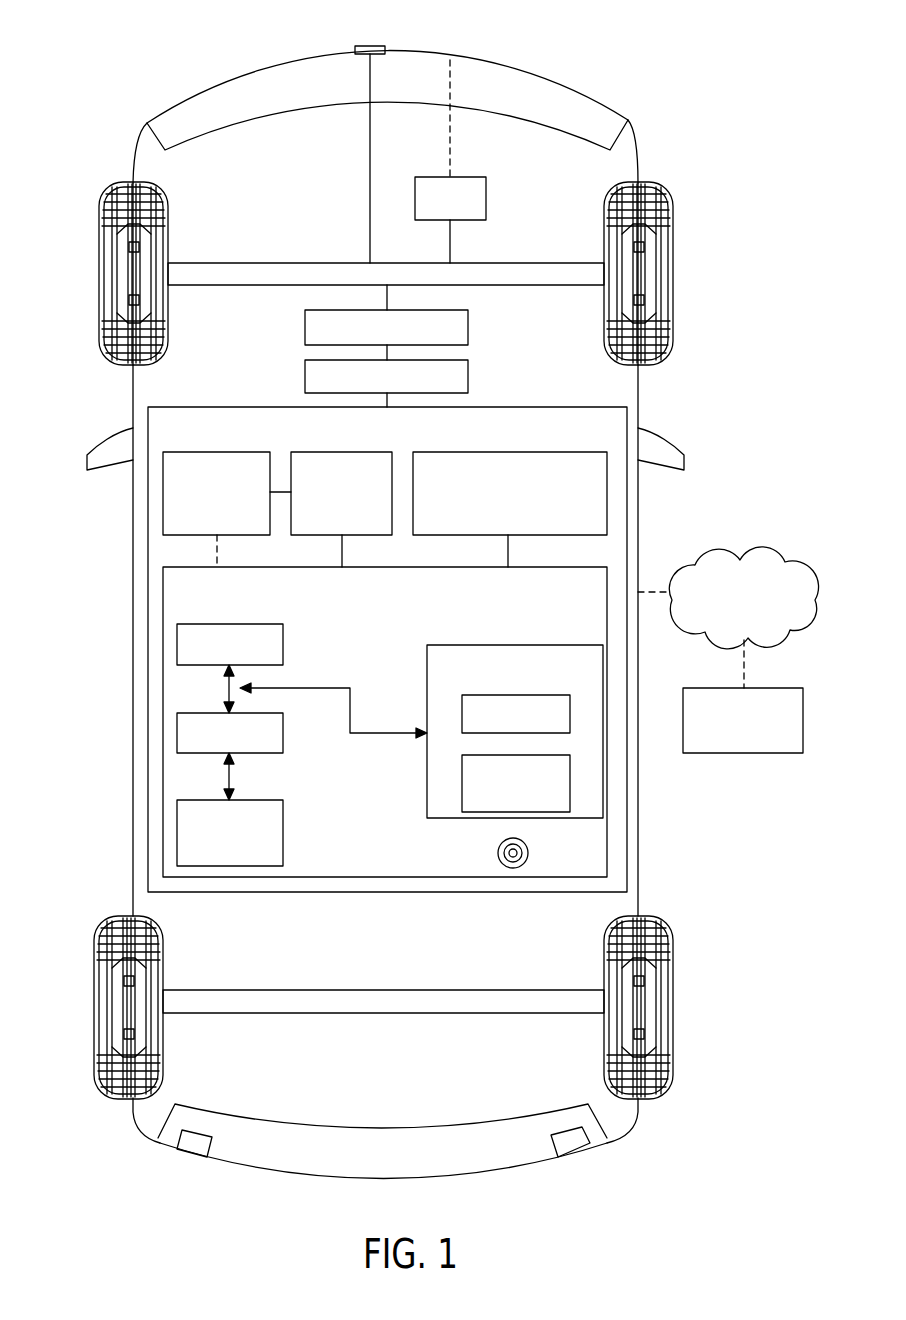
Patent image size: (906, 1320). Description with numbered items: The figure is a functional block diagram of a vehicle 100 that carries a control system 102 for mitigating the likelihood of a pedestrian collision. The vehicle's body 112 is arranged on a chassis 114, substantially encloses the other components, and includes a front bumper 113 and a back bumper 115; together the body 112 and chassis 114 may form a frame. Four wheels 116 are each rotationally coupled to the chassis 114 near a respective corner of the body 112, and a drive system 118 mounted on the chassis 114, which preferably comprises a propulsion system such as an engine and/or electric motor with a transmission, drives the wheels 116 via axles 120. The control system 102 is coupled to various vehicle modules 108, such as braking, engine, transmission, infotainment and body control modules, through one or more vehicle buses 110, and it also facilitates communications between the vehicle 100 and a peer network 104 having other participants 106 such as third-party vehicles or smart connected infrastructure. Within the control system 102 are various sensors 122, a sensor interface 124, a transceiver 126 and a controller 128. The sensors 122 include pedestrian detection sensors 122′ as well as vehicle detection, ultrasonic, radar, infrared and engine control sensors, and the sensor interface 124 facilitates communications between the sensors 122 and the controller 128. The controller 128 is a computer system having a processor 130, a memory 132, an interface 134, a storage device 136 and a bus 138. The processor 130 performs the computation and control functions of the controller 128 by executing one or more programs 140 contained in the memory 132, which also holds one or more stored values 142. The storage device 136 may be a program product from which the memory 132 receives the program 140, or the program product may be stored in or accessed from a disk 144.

The vehicle 100 is at (630, 75).
The control system 102 is at (213, 405).
The peer network 104 is at (745, 548).
The participants 106 is at (752, 755).
The vehicle modules 108 is at (470, 328).
The vehicle buses 110 is at (470, 378).
The body 112 is at (132, 388).
The front bumper 113 is at (240, 70).
The chassis 114 is at (447, 162).
The back bumper 115 is at (378, 1125).
The wheels 116 is at (98, 275).
The drive system 118 is at (487, 203).
The axles 120 is at (225, 263).
The sensors 122 is at (210, 450).
The pedestrian detection sensors 122′ is at (362, 47).
The sensor interface 124 is at (318, 450).
The transceiver 126 is at (558, 450).
The controller 128 is at (163, 597).
The processor 130 is at (283, 643).
The memory 132 is at (427, 663).
The interface 134 is at (283, 737).
The storage device 136 is at (283, 833).
The bus 138 is at (240, 688).
The program 140 is at (462, 714).
The stored values 142 is at (462, 787).
The disk 144 is at (498, 853).